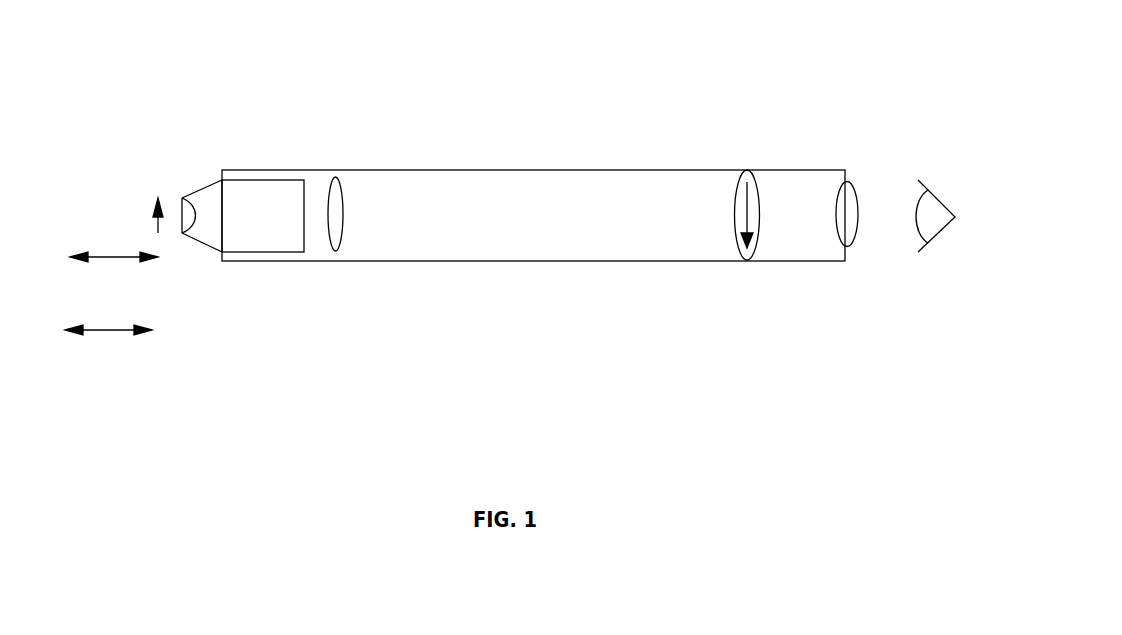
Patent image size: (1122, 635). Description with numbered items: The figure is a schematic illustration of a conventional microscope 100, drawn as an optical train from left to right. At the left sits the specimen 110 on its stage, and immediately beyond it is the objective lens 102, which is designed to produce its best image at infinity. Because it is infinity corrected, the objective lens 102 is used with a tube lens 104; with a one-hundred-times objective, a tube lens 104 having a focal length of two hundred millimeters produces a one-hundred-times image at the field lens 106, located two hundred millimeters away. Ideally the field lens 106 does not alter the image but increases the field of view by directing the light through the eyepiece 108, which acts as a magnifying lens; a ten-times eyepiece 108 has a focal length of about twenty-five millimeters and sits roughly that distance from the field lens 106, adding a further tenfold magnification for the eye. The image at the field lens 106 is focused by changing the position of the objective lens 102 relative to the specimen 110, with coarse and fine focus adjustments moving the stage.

The microscope 100 is at (729, 86).
The objective lens 102 is at (262, 252).
The tube lens 104 is at (335, 251).
The field lens 106 is at (747, 260).
The eyepiece 108 is at (847, 255).
The specimen 110 is at (150, 205).